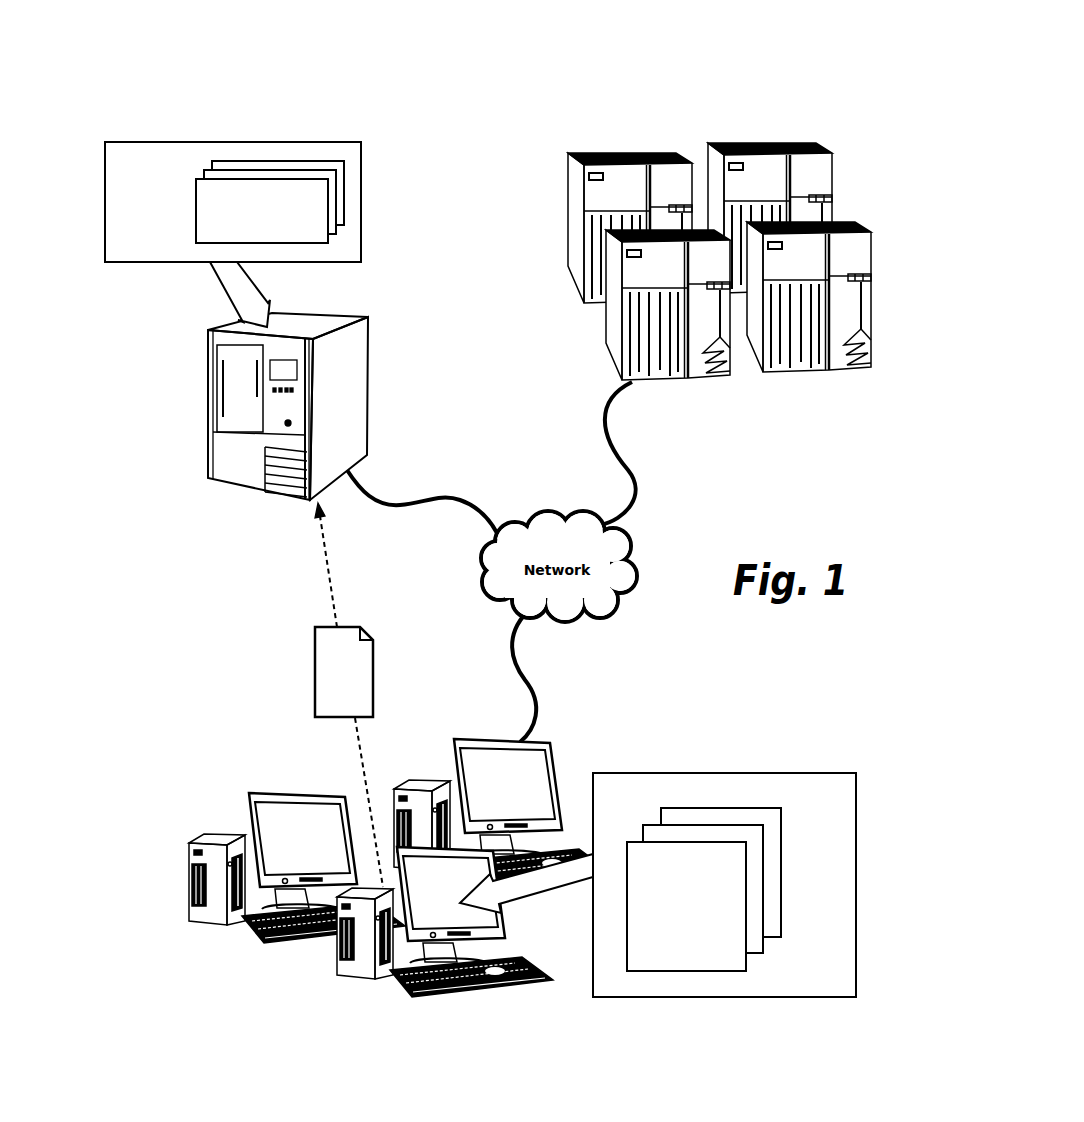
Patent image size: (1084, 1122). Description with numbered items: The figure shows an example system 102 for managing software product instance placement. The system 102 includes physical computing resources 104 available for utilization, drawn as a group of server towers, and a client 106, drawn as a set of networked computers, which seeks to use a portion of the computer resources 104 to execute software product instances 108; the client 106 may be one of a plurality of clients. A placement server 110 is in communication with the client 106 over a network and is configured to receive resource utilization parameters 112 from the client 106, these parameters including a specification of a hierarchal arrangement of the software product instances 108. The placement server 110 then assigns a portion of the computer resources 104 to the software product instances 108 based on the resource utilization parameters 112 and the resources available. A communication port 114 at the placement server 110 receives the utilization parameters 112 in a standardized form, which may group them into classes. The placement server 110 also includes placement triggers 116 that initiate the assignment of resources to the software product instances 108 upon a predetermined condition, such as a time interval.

The system 102 is at (591, 52).
The physical computing resources 104 is at (834, 187).
The client 106 is at (428, 1000).
The software product instances 108 is at (765, 886).
The placement server 110 is at (208, 428).
The resource utilization parameters 112 is at (315, 665).
The communication port 114 is at (324, 545).
The placement triggers 116 is at (196, 206).